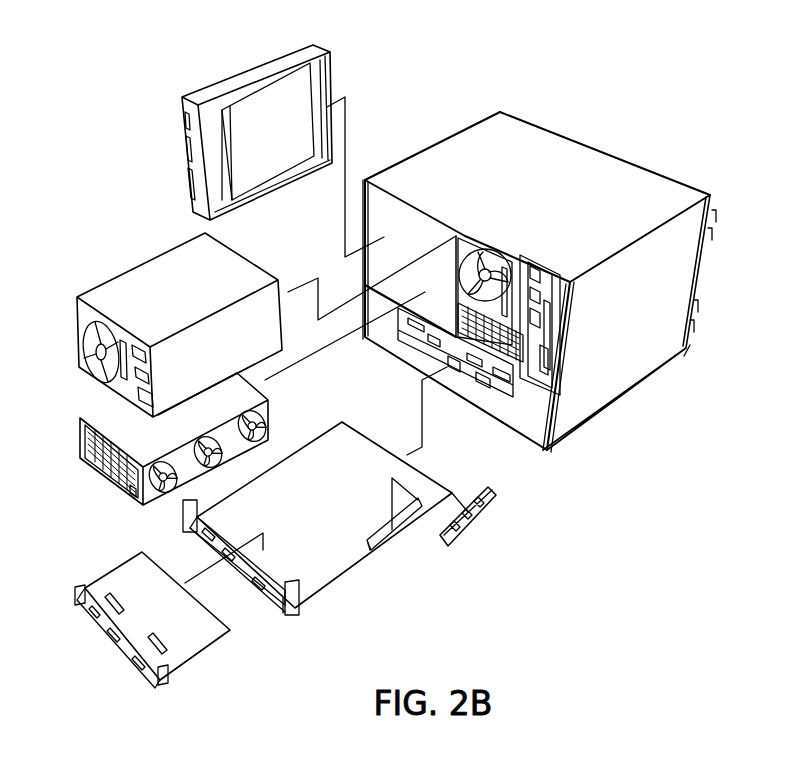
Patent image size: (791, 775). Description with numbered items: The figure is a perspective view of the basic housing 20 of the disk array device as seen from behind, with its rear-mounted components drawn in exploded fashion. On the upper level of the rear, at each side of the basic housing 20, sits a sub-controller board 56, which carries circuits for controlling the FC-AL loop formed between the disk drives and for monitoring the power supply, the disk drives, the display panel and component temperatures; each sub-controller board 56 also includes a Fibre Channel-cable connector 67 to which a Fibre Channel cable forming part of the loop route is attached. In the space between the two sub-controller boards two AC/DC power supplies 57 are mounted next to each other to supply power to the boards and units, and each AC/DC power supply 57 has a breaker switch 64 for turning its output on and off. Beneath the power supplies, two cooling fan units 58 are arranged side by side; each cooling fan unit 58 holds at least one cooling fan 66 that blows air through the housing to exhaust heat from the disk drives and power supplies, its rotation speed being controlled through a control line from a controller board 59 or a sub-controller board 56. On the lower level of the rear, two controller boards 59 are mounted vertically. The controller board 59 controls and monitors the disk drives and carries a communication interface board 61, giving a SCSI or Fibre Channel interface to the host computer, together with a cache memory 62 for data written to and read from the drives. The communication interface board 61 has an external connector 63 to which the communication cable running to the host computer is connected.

The basic housing 20 is at (568, 160).
The sub-controller board 56 is at (217, 92).
The AC/DC power supply 57 is at (165, 270).
The cooling fan unit 58 is at (100, 413).
The controller board 59 is at (328, 575).
The communication interface board 61 is at (193, 645).
The cache memory 62 is at (480, 538).
The external connector 63 is at (263, 595).
The breaker switch 64 is at (97, 463).
The cooling fan 66 is at (268, 412).
The Fibre Channel-cable connector 67 is at (183, 98).